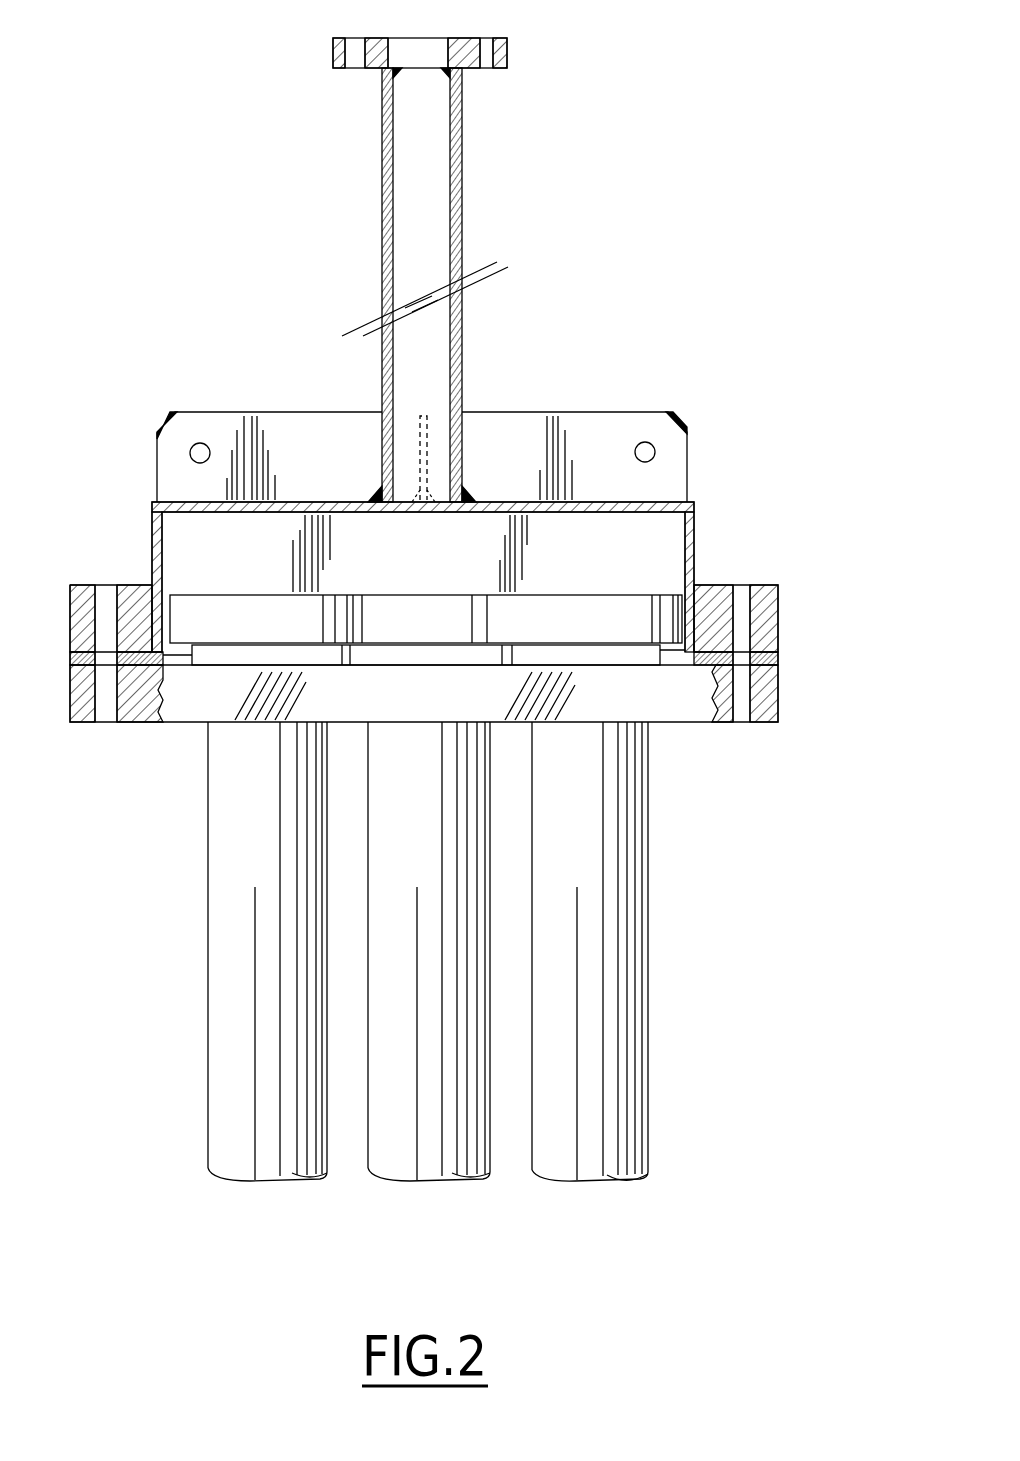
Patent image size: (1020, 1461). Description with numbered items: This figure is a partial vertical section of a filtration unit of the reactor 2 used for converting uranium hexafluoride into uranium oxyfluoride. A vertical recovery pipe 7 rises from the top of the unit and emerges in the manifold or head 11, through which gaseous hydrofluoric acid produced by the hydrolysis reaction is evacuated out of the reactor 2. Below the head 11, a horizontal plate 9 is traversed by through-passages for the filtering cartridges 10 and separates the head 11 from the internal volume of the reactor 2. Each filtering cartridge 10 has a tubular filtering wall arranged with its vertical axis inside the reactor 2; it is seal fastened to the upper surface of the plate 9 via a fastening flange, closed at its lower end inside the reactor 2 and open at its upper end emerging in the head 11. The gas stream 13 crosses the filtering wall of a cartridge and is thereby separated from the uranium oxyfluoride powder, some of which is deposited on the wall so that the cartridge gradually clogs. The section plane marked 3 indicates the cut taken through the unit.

The reactor 2 is at (699, 971).
The section line III-III 3 is at (263, 530).
The vertical recovery pipe 7 is at (422, 215).
The horizontal plate 9 is at (762, 706).
The filtering cartridge 10 is at (464, 989).
The manifold or head 11 is at (437, 568).
The gas stream 13 is at (607, 1062).